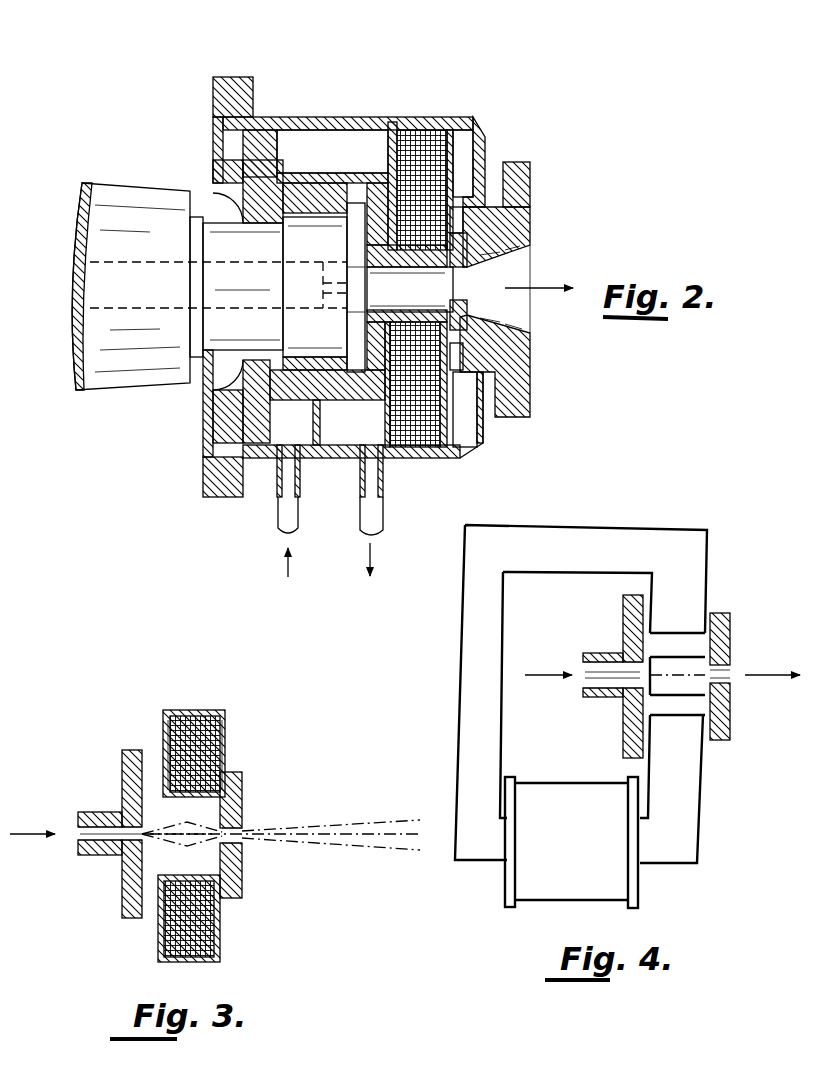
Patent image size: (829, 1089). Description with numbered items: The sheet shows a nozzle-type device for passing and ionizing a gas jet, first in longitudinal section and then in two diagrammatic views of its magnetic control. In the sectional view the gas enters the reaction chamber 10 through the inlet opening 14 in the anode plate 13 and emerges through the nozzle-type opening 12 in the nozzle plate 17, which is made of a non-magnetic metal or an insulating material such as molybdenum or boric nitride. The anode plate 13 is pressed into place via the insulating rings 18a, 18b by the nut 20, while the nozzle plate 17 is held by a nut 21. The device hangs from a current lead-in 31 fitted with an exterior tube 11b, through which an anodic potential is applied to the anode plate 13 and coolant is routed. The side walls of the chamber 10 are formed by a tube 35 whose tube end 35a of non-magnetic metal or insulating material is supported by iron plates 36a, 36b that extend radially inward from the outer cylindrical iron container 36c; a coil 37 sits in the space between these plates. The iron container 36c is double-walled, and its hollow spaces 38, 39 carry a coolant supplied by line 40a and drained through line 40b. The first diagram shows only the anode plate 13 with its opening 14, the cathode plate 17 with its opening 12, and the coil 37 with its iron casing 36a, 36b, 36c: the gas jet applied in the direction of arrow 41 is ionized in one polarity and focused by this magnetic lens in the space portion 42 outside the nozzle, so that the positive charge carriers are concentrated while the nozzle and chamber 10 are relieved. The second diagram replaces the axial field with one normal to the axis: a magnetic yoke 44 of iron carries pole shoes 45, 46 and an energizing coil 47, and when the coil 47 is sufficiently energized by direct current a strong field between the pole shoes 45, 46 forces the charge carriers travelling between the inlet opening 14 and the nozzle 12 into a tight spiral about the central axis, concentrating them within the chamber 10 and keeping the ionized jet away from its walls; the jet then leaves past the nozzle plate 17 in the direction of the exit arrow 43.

In FIG. 2, the reaction chamber 10 is at (428, 298).
In FIG. 3, the reaction chamber 10 is at (204, 819).
In FIG. 4, the reaction chamber 10 is at (684, 681).
In FIG. 2, the exterior tube 11b is at (210, 330).
In FIG. 2, the nozzle-type opening 12 is at (468, 280).
In FIG. 3, the nozzle-type opening 12 is at (248, 826).
In FIG. 4, the nozzle-type opening 12 is at (735, 667).
In FIG. 2, the anode plate 13 is at (357, 237).
In FIG. 3, the anode plate 13 is at (122, 870).
In FIG. 4, the anode plate 13 is at (623, 720).
In FIG. 2, the inlet opening 14 is at (357, 288).
In FIG. 3, the inlet opening 14 is at (100, 830).
In FIG. 4, the inlet opening 14 is at (608, 670).
In FIG. 2, the nozzle plate 17 is at (468, 342).
In FIG. 3, the nozzle plate 17 is at (242, 780).
In FIG. 4, the nozzle plate 17 is at (723, 620).
In FIG. 2, the insulating ring 18a is at (334, 218).
In FIG. 2, the insulating ring 18b is at (276, 223).
In FIG. 2, the nut 20 is at (217, 82).
In FIG. 2, the nut 21 is at (530, 180).
In FIG. 2, the current lead-in 31 is at (114, 190).
In FIG. 2, the tube 35 is at (360, 343).
In FIG. 2, the tube end 35a is at (410, 289).
In FIG. 2, the iron plate 36a is at (388, 145).
In FIG. 3, the iron plate 36a is at (167, 727).
In FIG. 2, the iron plate 36b is at (470, 130).
In FIG. 3, the iron plate 36b is at (230, 730).
In FIG. 2, the iron container 36c is at (453, 123).
In FIG. 3, the iron container 36c is at (182, 712).
In FIG. 2, the coil 37 is at (410, 440).
In FIG. 3, the coil 37 is at (160, 933).
In FIG. 2, the hollow space 38 is at (295, 140).
In FIG. 2, the hollow space 39 is at (478, 438).
In FIG. 2, the coolant supply line 40a is at (278, 510).
In FIG. 2, the coolant drain line 40b is at (383, 510).
In FIG. 3, the arrow 41 is at (32, 814).
In FIG. 4, the arrow 41 is at (532, 685).
In FIG. 3, the space portion 42 is at (289, 840).
In FIG. 4, the outlet flow 43 is at (752, 680).
In FIG. 4, the magnetic yoke 44 is at (500, 613).
In FIG. 4, the pole shoe 45 is at (678, 647).
In FIG. 4, the pole shoe 46 is at (667, 707).
In FIG. 4, the energizing coil 47 is at (555, 797).